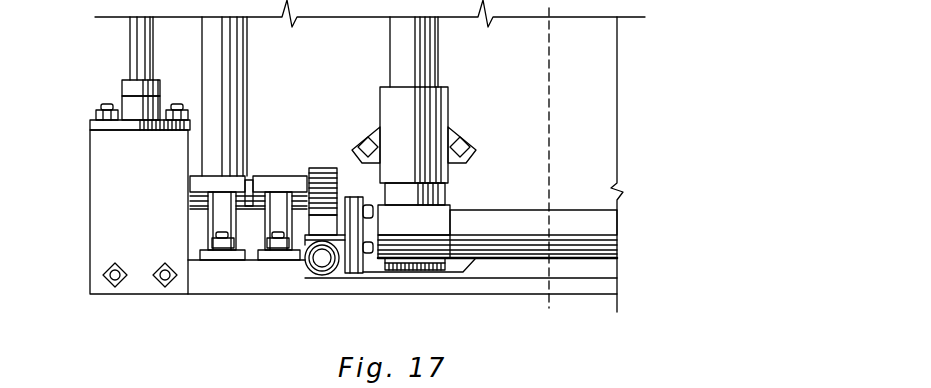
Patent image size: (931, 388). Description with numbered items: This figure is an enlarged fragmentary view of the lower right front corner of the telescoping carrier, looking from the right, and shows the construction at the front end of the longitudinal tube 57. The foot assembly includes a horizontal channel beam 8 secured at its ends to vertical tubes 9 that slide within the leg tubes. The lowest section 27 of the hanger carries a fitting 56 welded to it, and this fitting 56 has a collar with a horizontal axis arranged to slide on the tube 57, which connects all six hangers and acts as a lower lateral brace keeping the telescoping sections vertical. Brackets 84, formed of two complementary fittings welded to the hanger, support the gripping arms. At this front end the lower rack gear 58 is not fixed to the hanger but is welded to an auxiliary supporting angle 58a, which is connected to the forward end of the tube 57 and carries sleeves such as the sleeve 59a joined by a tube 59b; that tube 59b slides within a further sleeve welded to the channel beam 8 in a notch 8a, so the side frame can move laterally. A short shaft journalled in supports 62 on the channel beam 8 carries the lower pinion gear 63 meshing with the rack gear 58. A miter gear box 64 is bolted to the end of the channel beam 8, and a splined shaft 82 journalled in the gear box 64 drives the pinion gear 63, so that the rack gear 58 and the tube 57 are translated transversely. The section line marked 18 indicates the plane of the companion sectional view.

The splined shaft 82 is at (128, 45).
The vertical tube 9 is at (249, 85).
The support 62 is at (282, 185).
The lower pinion gear 63 is at (322, 168).
The miter gear box 64 is at (103, 190).
The bracket 84 is at (470, 140).
The lowest section 27 is at (445, 197).
The fitting 56 is at (445, 222).
The longitudinal tube 57 is at (555, 222).
The lower rack gear 58 is at (325, 230).
The sleeve 59a is at (308, 268).
The tube 59b is at (318, 283).
The auxiliary supporting angle 58a is at (352, 275).
The horizontal channel beam 8 is at (402, 293).
The notch 8a is at (483, 283).
The section line 18- 18 is at (538, 308).